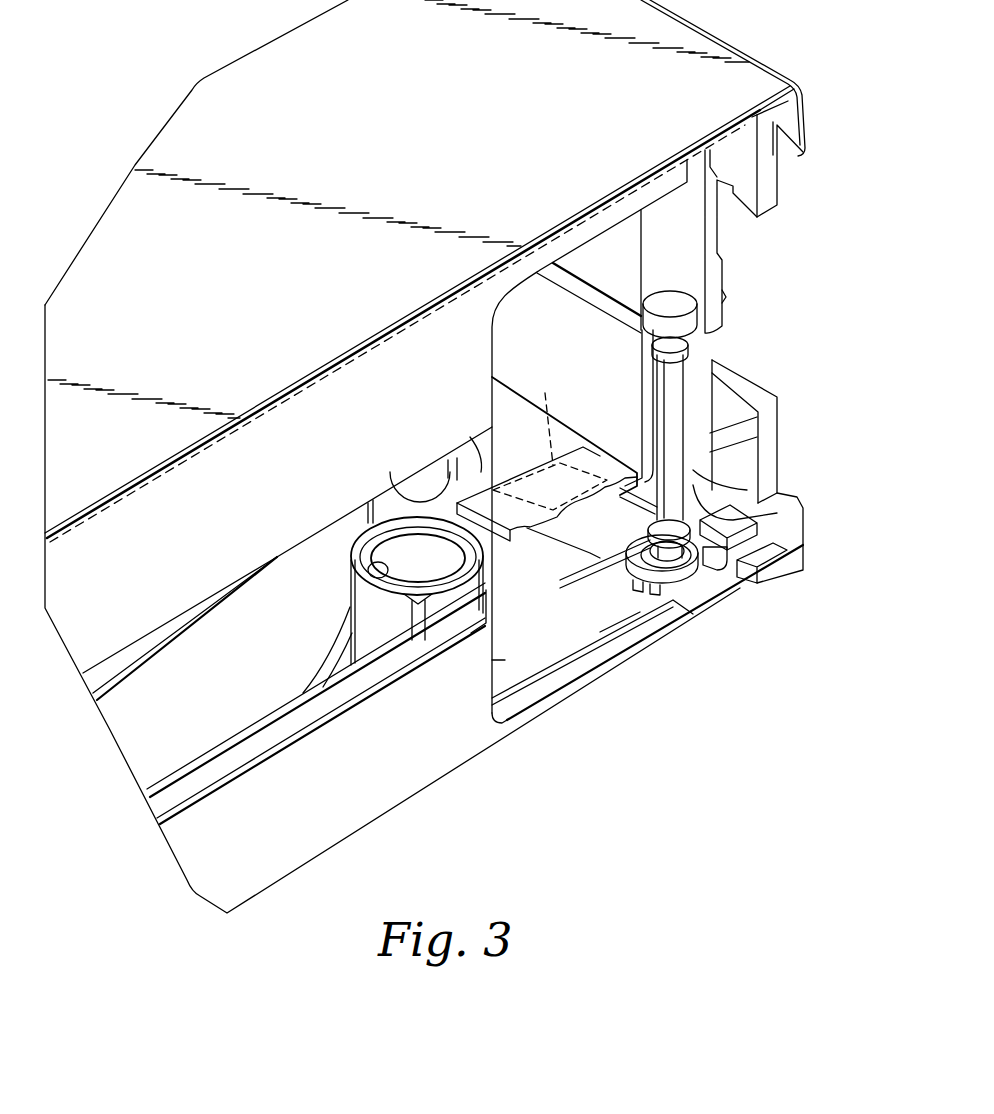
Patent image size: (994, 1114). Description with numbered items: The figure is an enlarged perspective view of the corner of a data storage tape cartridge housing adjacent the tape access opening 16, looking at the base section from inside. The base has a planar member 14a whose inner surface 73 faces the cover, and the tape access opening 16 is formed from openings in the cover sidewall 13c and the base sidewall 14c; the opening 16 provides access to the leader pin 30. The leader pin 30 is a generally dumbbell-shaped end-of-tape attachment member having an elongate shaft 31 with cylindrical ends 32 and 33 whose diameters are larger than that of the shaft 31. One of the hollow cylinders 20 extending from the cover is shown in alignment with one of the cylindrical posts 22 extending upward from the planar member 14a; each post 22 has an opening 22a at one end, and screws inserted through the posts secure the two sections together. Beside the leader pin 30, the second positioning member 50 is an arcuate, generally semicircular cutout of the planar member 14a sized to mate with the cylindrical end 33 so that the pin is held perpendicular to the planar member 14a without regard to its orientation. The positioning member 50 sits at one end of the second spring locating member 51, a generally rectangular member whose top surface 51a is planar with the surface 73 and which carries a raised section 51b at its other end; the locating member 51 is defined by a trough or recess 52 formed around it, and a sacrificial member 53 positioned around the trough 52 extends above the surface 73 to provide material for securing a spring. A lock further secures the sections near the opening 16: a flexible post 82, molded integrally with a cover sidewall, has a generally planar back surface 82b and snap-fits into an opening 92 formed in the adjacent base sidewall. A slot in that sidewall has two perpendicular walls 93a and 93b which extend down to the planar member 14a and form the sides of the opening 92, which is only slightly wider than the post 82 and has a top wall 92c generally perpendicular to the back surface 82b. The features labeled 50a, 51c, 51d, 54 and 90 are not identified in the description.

The sidewall 13c is at (276, 527).
The planar member 14a is at (551, 635).
The sidewall 14c is at (410, 785).
The tape access opening 16 is at (571, 620).
The cylinder 20 is at (430, 473).
The cylindrical post 22 is at (370, 625).
The opening 22a is at (368, 566).
The leader pin 30 is at (667, 383).
The elongate shaft 31 is at (660, 472).
The cylindrical end 32 is at (682, 338).
The cylindrical end 33 is at (687, 577).
The second positioning member 50 is at (597, 566).
The base plate edge 50a is at (607, 617).
The second spring locating member 51 is at (618, 523).
The top surface 51a is at (595, 530).
The raised section 51b is at (545, 400).
The support plate arm 51c is at (594, 582).
The support plate foot 51d is at (803, 501).
The trough 52 is at (562, 584).
The sacrificial member 53 is at (523, 492).
The clip 54 is at (722, 584).
The inner surface 73 is at (505, 660).
The flexible post 82 is at (713, 236).
The planar back surface 82b is at (668, 252).
The guide 90 is at (480, 470).
The opening 92 is at (705, 483).
The top wall 92c is at (703, 440).
The slot wall 93a is at (643, 400).
The slot wall 93b is at (706, 460).